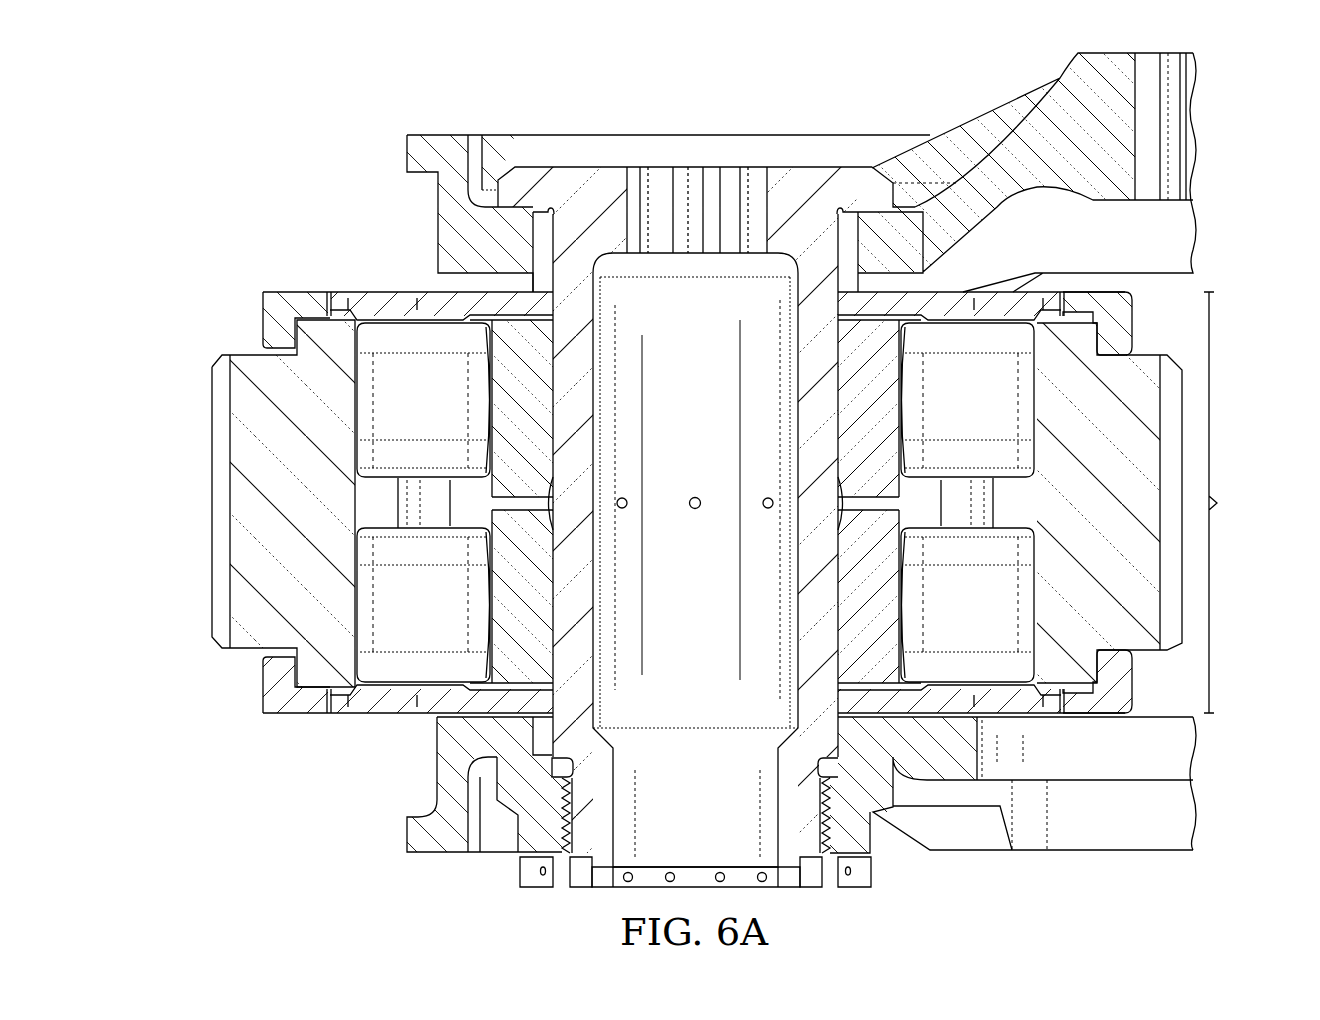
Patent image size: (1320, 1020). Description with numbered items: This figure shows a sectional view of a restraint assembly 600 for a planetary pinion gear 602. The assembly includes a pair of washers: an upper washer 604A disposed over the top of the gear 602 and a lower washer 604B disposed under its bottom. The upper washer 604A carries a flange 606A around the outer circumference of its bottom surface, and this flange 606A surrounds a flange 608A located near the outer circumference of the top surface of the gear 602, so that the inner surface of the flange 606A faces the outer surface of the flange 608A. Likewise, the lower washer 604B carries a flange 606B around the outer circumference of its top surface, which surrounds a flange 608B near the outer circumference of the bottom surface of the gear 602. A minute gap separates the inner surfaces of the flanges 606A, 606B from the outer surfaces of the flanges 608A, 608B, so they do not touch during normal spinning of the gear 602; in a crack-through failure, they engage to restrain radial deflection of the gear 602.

The restraint assembly 600 is at (1235, 502).
The planetary pinion gear 602 is at (210, 503).
The upper washer 604A is at (395, 292).
The lower washer 604B is at (408, 718).
The flange 606A is at (272, 322).
The flange 606B is at (272, 690).
The flange 608A is at (312, 327).
The flange 608B is at (335, 717).